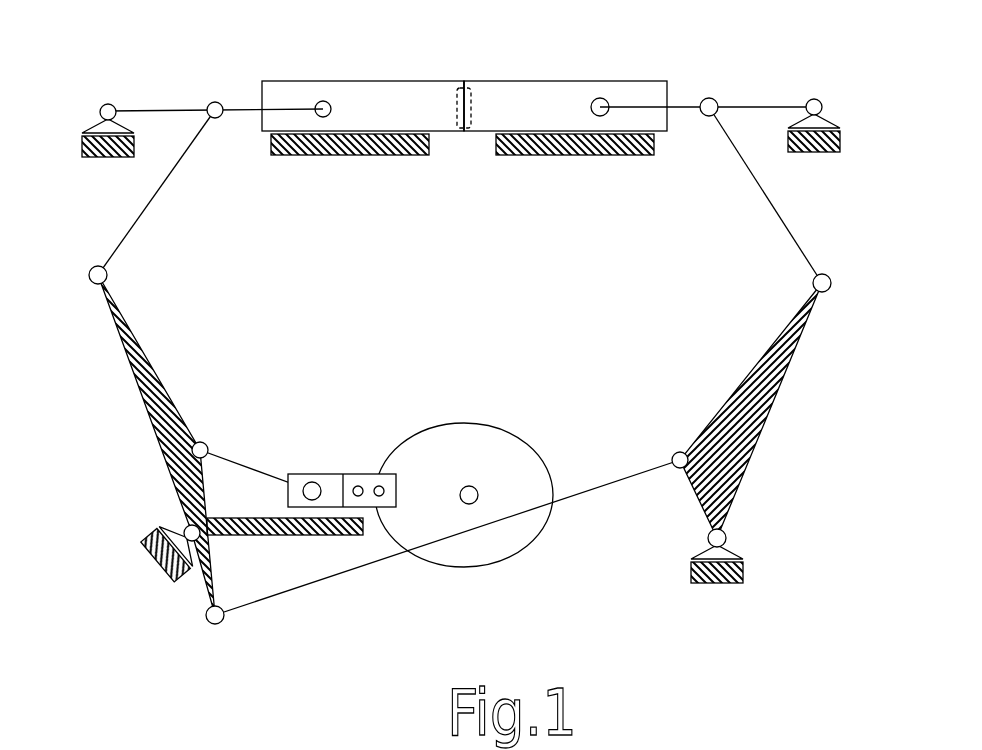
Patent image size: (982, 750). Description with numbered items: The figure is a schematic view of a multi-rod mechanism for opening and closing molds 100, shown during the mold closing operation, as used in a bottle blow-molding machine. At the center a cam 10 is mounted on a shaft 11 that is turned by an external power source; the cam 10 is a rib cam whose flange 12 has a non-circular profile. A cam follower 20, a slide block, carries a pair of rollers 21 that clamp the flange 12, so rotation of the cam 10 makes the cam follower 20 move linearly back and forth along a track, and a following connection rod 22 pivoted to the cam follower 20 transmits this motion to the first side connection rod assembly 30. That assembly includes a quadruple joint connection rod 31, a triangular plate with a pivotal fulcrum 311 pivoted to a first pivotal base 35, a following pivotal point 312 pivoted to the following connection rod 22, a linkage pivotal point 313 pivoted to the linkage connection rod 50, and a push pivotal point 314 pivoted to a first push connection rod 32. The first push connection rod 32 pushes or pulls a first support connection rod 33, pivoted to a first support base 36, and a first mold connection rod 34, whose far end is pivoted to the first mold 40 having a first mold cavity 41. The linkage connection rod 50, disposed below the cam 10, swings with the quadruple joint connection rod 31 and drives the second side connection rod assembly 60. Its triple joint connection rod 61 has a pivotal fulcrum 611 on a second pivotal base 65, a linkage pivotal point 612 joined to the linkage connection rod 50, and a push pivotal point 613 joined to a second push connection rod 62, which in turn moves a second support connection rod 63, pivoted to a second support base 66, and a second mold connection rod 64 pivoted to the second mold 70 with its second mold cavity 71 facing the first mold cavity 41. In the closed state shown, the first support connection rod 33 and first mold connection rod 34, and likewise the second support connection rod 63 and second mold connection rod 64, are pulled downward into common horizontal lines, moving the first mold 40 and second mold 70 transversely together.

The multi-rod mechanism for opening and closing molds 100 is at (119, 42).
The cam 10 is at (487, 461).
The shaft 11 is at (478, 492).
The flange 12 is at (437, 427).
The cam follower 20 is at (307, 474).
The rollers 21 is at (378, 485).
The following connection rod 22 is at (257, 470).
The first side connection rod assembly 30 is at (170, 376).
The quadruple joint connection rod 31 is at (137, 390).
The first push connection rod 32 is at (143, 210).
The first support connection rod 33 is at (153, 108).
The first mold connection rod 34 is at (240, 108).
The first pivotal base 35 is at (172, 577).
The first support base 36 is at (93, 130).
The first mold 40 is at (398, 80).
The first mold cavity 41 is at (455, 132).
The linkage connection rod 50 is at (380, 563).
The second side connection rod assembly 60 is at (750, 314).
The triple joint connection rod 61 is at (777, 398).
The second push connection rod 62 is at (775, 198).
The second support connection rod 63 is at (761, 107).
The second mold connection rod 64 is at (686, 107).
The second pivotal base 65 is at (737, 557).
The second support base 66 is at (822, 112).
The second mold 70 is at (531, 80).
The second mold cavity 71 is at (472, 132).
The pivotal fulcrum 311 is at (185, 533).
The following pivotal point 312 is at (202, 443).
The linkage pivotal point 313 is at (215, 627).
The push pivotal point 314 is at (106, 273).
The pivotal fulcrum 611 is at (727, 530).
The linkage pivotal point 612 is at (680, 453).
The push pivotal point 613 is at (830, 278).